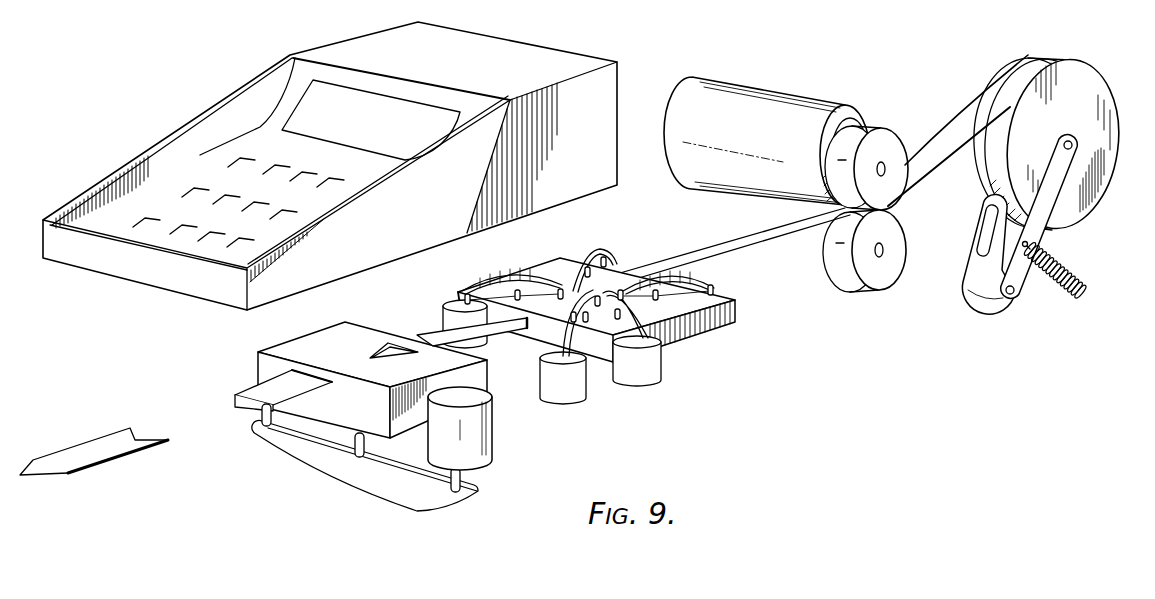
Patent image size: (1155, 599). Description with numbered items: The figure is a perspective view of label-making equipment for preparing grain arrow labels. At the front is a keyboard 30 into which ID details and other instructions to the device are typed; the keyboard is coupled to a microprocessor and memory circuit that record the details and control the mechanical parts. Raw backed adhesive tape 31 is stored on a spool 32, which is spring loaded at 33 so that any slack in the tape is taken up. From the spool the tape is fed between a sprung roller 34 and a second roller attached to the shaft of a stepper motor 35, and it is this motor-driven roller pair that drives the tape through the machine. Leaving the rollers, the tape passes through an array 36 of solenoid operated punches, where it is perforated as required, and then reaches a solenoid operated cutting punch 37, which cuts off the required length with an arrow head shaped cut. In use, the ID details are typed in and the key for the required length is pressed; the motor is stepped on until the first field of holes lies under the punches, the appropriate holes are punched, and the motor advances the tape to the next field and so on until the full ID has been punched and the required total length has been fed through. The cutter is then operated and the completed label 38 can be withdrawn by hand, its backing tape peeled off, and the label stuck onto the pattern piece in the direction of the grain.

The keyboard 30 is at (222, 100).
The raw backed adhesive tape 31 is at (952, 128).
The spool 32 is at (1104, 74).
The spring loading 33 is at (1057, 287).
The sprung roller 34 is at (890, 284).
The stepper motor 35 is at (820, 120).
The array of solenoid operated punches 36 is at (697, 340).
The solenoid operated cutting punch 37 is at (257, 371).
The completed label 38 is at (130, 452).